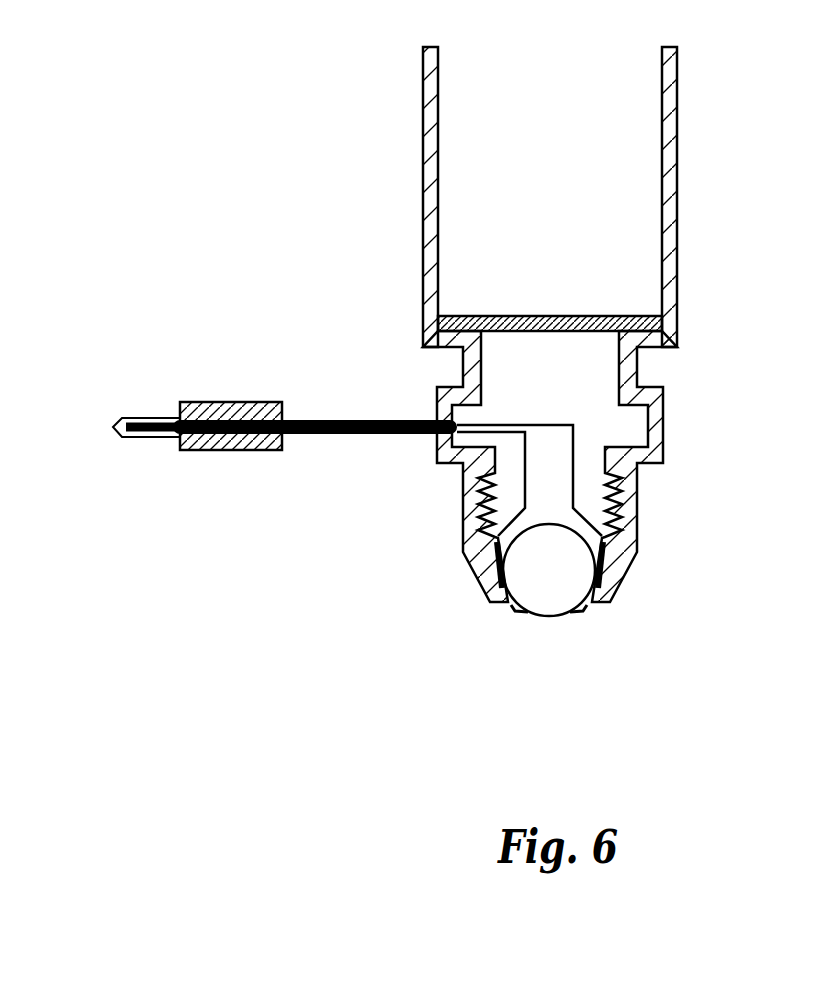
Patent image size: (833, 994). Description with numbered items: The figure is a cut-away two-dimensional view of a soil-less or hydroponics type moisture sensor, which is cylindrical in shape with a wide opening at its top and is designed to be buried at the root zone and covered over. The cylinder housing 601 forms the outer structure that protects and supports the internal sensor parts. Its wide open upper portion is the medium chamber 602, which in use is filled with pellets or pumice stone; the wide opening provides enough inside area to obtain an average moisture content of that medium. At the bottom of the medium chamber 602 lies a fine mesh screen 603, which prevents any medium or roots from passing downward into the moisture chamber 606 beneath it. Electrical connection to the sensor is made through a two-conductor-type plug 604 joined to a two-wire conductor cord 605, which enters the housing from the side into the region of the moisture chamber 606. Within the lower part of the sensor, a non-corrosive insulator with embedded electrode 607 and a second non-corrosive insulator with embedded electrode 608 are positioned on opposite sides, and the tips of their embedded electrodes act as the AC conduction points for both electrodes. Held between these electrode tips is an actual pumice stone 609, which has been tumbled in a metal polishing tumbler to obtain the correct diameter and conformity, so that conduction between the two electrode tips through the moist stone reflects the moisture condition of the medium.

The cylinder housing 601 is at (421, 172).
The medium chamber 602 is at (625, 125).
The fine mesh screen 603 is at (600, 315).
The two-conductor-type plug 604 is at (232, 402).
The two-wire conductor cord 605 is at (383, 420).
The moisture chamber 606 is at (603, 372).
The non-corrosive insulator with embedded electrode 607 is at (476, 558).
The non-corrosive insulator with embedded electrode 608 is at (620, 558).
The pumice stone 609 is at (543, 608).